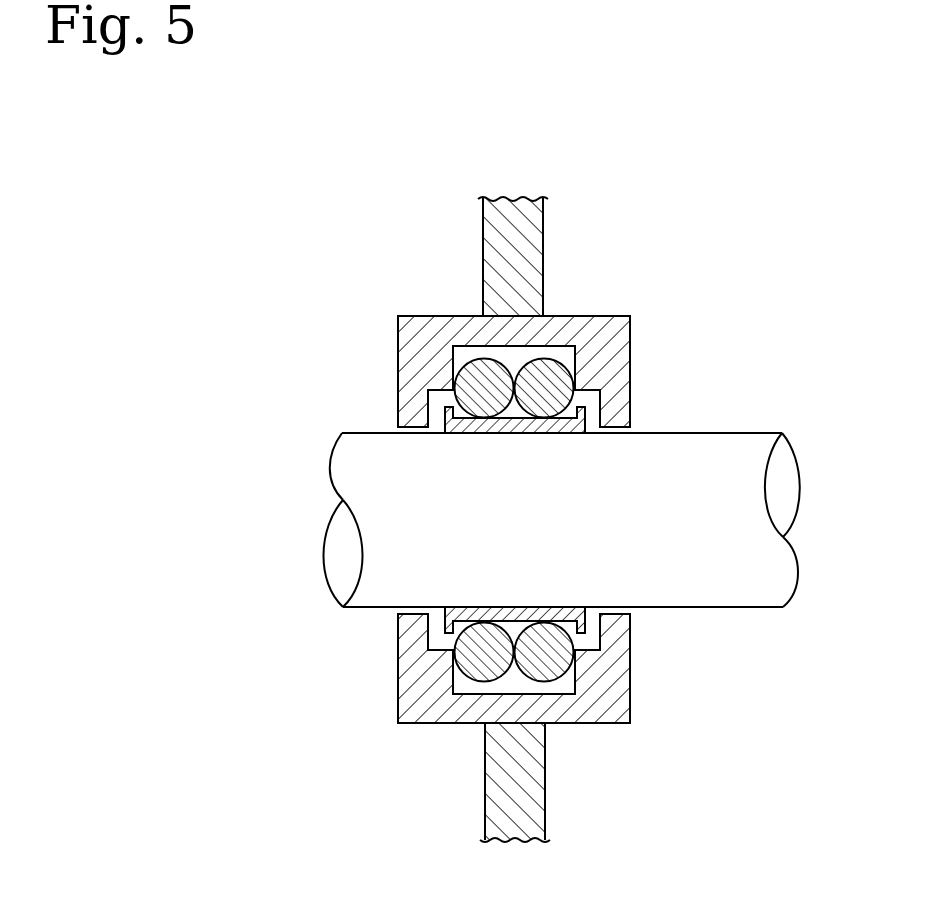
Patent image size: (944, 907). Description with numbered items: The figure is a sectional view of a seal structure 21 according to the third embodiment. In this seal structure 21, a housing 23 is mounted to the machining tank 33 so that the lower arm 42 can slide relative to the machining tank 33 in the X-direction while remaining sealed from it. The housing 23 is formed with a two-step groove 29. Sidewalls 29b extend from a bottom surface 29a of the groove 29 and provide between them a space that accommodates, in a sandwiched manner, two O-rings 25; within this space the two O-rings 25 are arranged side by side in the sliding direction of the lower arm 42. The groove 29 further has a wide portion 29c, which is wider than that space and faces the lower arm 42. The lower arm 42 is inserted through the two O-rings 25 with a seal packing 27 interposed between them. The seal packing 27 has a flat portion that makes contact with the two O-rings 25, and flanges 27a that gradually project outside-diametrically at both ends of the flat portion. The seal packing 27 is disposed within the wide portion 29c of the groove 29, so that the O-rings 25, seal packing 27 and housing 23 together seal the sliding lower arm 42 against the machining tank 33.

The seal structure 21 is at (287, 280).
The housing 23 is at (432, 325).
The O-rings 25 is at (490, 372).
The seal packing 27 is at (510, 427).
The flanges 27a is at (435, 433).
The two-step groove 29 is at (243, 321).
The bottom surface 29a is at (460, 352).
The sidewalls 29b is at (456, 370).
The wide portion 29c is at (446, 408).
The machining tank 33 is at (515, 208).
The lower arm 42 is at (722, 447).